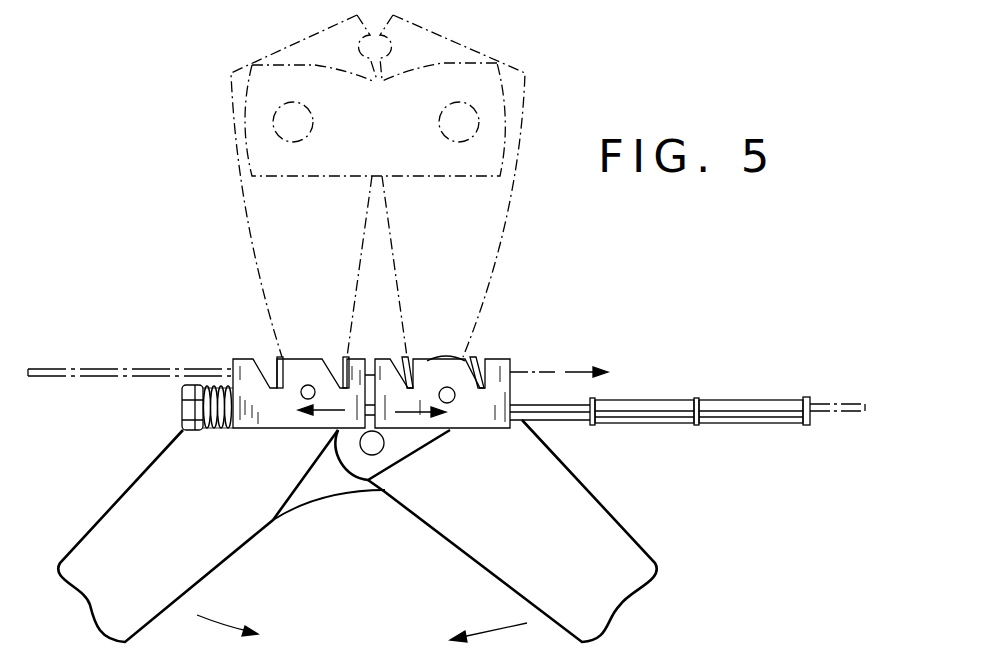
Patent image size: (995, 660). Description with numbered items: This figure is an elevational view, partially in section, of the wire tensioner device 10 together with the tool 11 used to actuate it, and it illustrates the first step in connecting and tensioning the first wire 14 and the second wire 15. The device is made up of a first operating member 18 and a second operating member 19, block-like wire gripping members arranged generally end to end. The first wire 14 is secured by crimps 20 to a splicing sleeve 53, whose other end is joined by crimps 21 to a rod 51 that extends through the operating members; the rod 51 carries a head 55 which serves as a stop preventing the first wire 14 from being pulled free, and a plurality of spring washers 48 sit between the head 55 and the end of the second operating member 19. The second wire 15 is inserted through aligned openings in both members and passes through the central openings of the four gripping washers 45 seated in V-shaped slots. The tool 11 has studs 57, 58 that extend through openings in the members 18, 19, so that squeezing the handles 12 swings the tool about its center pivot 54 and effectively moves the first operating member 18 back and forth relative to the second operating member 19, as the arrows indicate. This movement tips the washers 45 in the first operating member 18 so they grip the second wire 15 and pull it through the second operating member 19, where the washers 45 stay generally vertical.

The wire tensioner device 10 is at (236, 305).
The tool 11 is at (216, 218).
The handles 12 is at (235, 533).
The first wire 14 is at (838, 407).
The second wire 15 is at (128, 368).
The first operating member 18 is at (504, 430).
The second operating member 19 is at (252, 417).
The crimps 20 is at (742, 400).
The crimps 21 is at (645, 400).
The gripping washer member 45 is at (345, 356).
The spring washers 48 is at (222, 432).
The rod 51 is at (567, 416).
The splicing sleeve 53 is at (695, 427).
The center pivot 54 is at (369, 452).
The head 55 is at (190, 398).
The stud 57 is at (449, 404).
The stud 58 is at (305, 399).